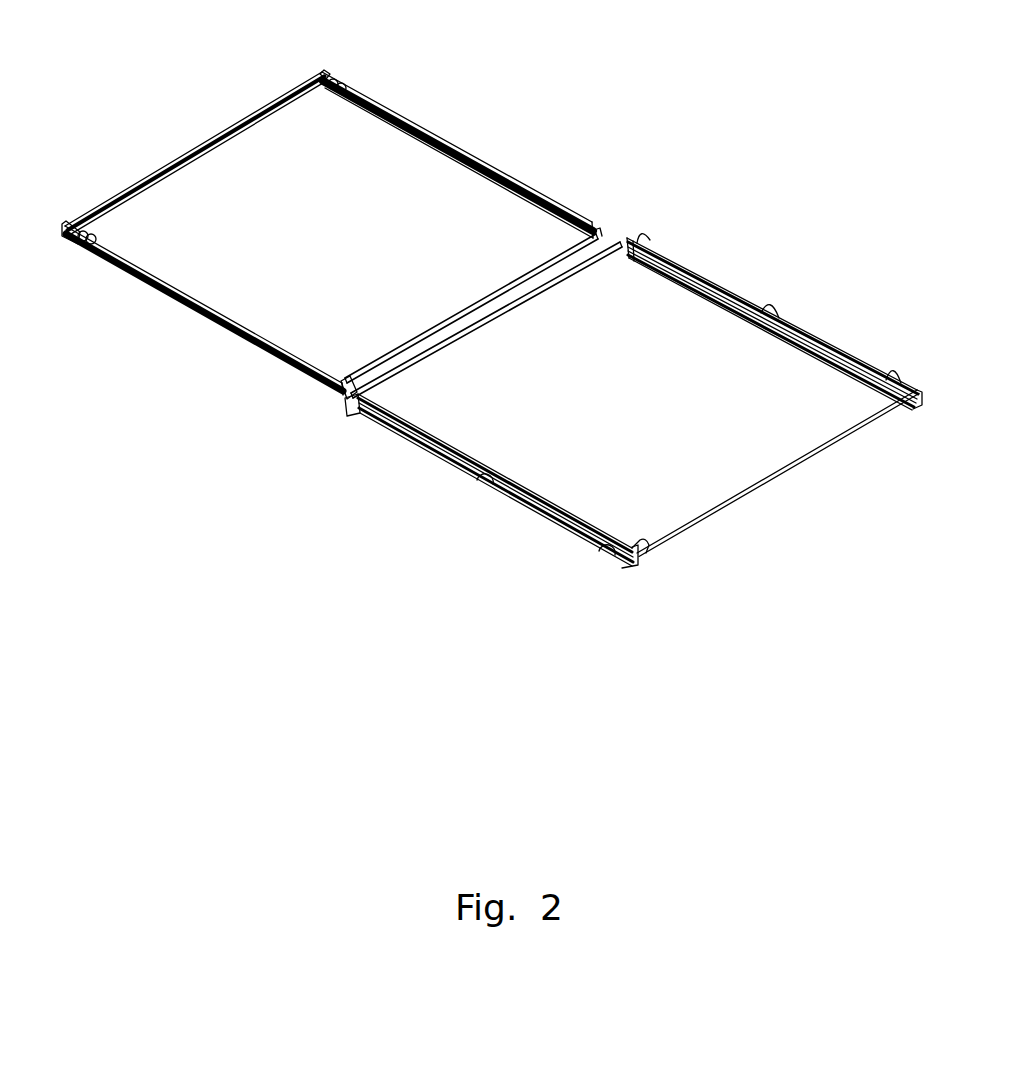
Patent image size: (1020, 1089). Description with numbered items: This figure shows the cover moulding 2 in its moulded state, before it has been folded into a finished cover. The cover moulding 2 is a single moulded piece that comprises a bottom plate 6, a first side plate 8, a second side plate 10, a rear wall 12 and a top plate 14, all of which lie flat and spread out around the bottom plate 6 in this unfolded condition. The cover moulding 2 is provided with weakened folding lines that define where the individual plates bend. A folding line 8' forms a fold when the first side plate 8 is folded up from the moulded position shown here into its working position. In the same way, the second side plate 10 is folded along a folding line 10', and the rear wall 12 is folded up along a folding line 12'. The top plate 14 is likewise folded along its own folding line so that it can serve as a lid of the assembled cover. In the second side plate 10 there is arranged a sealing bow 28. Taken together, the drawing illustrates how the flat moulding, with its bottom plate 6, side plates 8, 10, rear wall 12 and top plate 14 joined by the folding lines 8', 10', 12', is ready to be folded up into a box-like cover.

The cover moulding 2 is at (492, 345).
The bottom plate 6 is at (633, 404).
The first side plate 8 is at (489, 481).
The folding line 8' is at (657, 591).
The second side plate 10 is at (774, 300).
The folding line 10' is at (778, 463).
The rear wall 12 is at (534, 239).
The folding line 12' is at (588, 274).
The top plate 14 is at (442, 197).
The sealing bow 28 is at (586, 272).